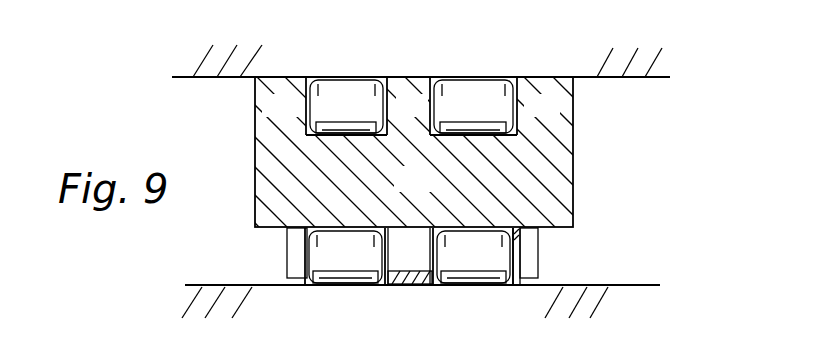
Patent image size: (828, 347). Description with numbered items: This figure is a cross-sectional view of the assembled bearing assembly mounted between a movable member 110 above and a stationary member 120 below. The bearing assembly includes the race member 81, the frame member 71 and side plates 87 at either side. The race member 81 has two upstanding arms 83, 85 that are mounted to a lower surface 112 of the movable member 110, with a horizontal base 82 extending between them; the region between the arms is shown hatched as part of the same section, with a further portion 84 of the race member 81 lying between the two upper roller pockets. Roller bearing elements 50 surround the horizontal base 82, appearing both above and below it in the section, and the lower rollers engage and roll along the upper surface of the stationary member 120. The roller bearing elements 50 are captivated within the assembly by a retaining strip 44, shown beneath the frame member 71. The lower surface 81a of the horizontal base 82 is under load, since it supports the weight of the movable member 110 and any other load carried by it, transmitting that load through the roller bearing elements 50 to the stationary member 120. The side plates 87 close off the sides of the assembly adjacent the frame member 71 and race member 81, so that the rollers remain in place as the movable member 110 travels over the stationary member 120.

The movable member 110 is at (432, 61).
The lower surface of the movable member 112 is at (208, 84).
The stationary member 120 is at (330, 329).
The race member 81 is at (406, 152).
The lower surface of the horizontal member 81a is at (520, 234).
The horizontal base 82 is at (426, 189).
The arm 83 is at (292, 115).
The middle wall of spacer block 84 is at (425, 115).
The arm 85 is at (555, 115).
The roller bearing elements 50 is at (356, 115).
The frame member 71 is at (418, 264).
The retaining strip 44 is at (407, 285).
The side plates 87 is at (287, 255).